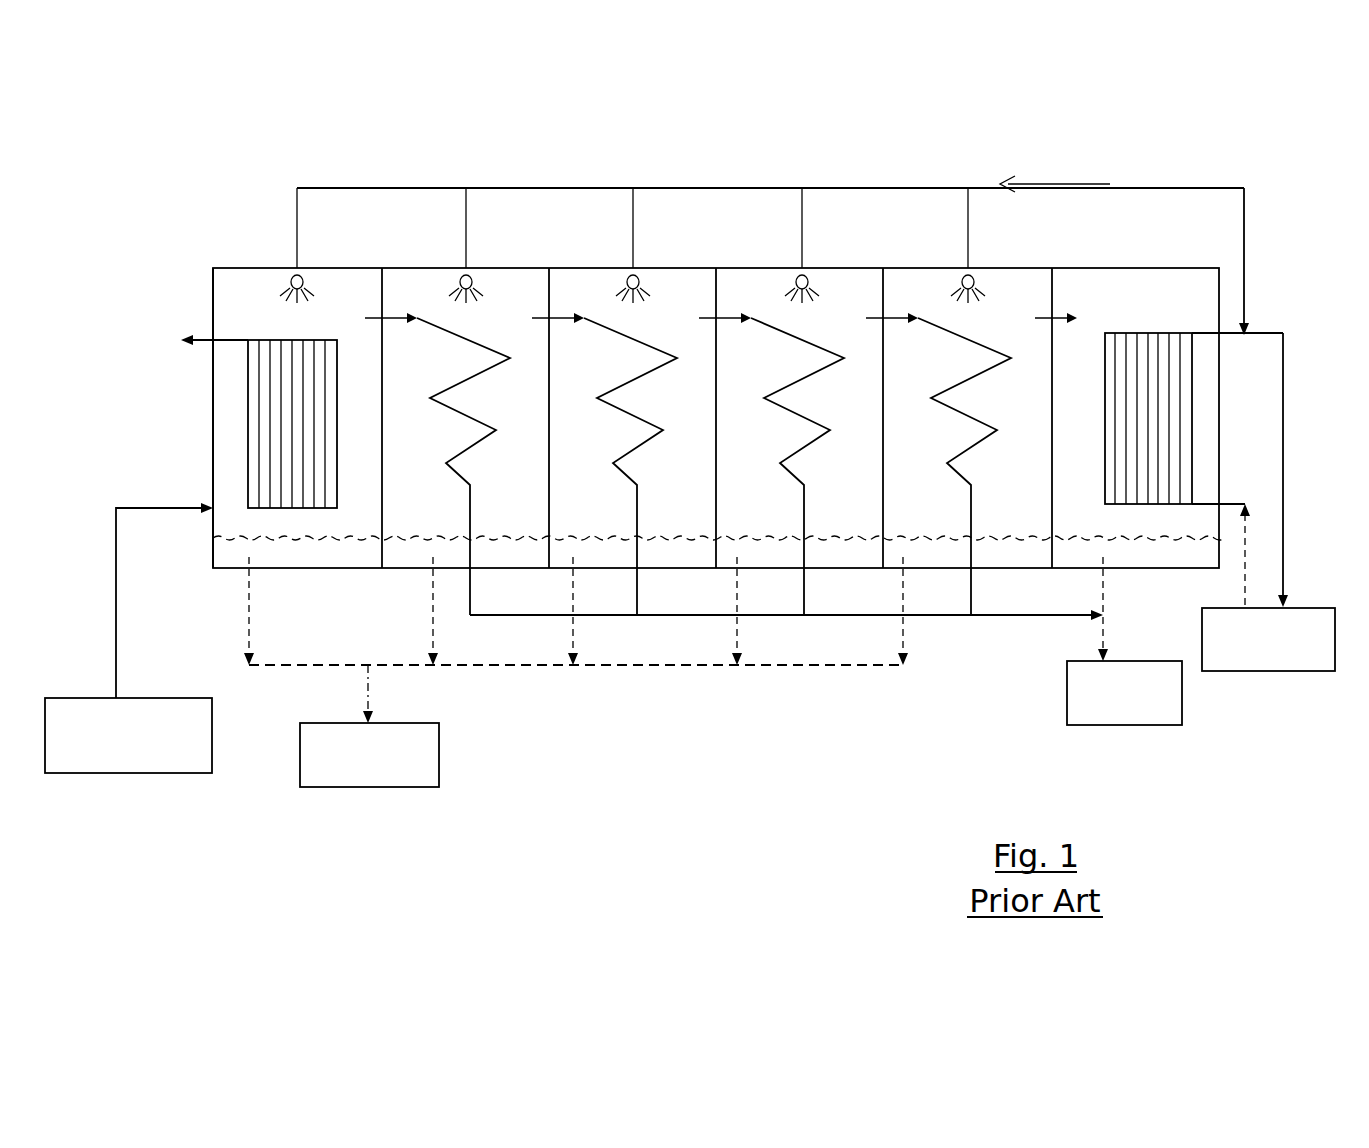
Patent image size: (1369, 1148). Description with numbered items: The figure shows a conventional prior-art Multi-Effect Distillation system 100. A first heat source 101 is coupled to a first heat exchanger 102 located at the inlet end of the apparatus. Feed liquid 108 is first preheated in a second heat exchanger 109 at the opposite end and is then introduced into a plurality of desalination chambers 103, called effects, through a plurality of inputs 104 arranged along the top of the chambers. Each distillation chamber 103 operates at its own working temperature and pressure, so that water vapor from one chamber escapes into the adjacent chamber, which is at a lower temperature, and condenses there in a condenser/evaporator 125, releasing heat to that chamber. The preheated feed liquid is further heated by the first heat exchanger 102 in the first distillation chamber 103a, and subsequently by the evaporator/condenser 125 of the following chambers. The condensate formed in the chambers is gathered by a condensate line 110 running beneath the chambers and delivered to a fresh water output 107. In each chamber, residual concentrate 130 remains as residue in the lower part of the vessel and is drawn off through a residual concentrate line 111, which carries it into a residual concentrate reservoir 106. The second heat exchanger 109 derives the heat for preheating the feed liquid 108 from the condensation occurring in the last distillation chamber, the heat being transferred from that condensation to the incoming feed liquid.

The Multi-Effect Distillation system 100 is at (662, 108).
The first heat source 101 is at (129, 638).
The first heat exchanger 102 is at (242, 437).
The desalination chamber 103 is at (492, 305).
The first distillation chamber 103a is at (215, 306).
The input 104 is at (420, 268).
The residual concentrate reservoir 106 is at (369, 726).
The fresh water output 107 is at (1124, 641).
The feed liquid 108 is at (1268, 502).
The second heat exchanger 109 is at (1190, 403).
The condensate line 110 is at (940, 615).
The residual concentrate line 111 is at (433, 690).
The condenser/evaporator 125 is at (805, 485).
The residual concentrate 130 is at (848, 550).